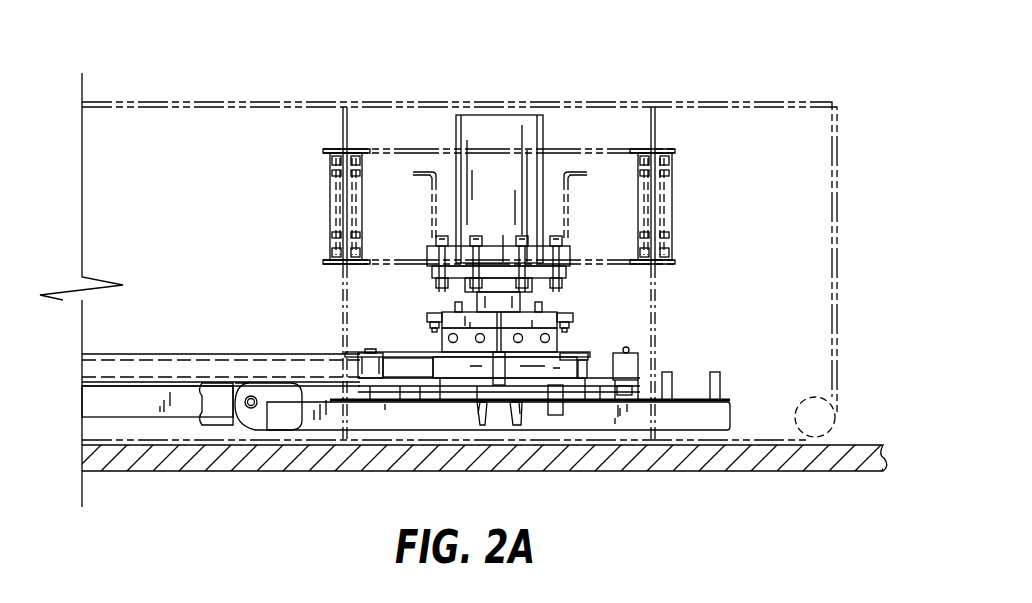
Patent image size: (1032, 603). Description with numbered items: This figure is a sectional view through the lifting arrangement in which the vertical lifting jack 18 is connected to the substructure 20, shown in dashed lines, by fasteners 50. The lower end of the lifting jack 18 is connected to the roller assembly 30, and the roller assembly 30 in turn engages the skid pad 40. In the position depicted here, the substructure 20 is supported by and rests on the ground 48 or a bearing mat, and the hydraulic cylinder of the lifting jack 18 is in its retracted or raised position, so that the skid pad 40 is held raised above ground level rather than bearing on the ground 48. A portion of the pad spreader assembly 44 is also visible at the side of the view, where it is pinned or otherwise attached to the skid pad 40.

The vertical lifting jack 18 is at (512, 128).
The substructure 20 is at (750, 101).
The roller assembly 30 is at (557, 340).
The skid pad 40 is at (700, 418).
The pad spreader assembly 44 is at (132, 403).
The ground 48 is at (300, 463).
The fasteners 50 is at (566, 281).